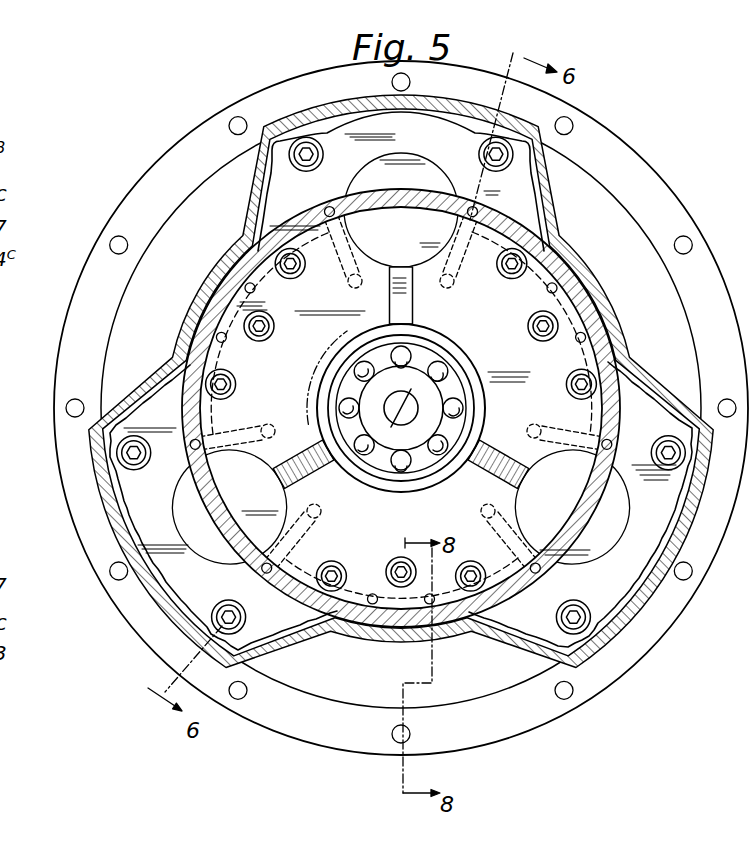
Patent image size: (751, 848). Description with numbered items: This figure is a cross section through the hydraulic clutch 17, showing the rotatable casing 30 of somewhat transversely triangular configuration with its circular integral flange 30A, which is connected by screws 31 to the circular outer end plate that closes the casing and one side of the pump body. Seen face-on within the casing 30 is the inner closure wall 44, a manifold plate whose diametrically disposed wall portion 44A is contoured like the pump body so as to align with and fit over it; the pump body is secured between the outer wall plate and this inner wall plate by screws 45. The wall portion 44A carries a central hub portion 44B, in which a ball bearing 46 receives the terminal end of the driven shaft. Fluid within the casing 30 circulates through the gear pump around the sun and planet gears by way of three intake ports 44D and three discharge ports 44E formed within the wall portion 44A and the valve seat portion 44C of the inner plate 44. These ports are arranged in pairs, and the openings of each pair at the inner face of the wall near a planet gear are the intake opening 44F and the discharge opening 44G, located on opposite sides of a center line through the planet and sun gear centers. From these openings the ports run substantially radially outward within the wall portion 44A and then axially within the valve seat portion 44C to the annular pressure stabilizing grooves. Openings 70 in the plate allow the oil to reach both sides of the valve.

The hydraulic clutch 17 is at (596, 114).
The rotatable casing 30 is at (286, 112).
The circular integral flange 30A is at (628, 146).
The screws 31 is at (690, 233).
The inner closure wall 44 is at (284, 213).
The wall portion 44A is at (290, 190).
The hub portion 44B is at (445, 343).
The valve seat portion 44C is at (245, 262).
The intake ports 44D is at (474, 210).
The discharge ports 44E is at (330, 207).
The intake openings 44F is at (450, 300).
The discharge openings 44G is at (401, 406).
The screws 45 is at (298, 270).
The ball bearing 46 is at (437, 372).
The openings 70 is at (245, 290).